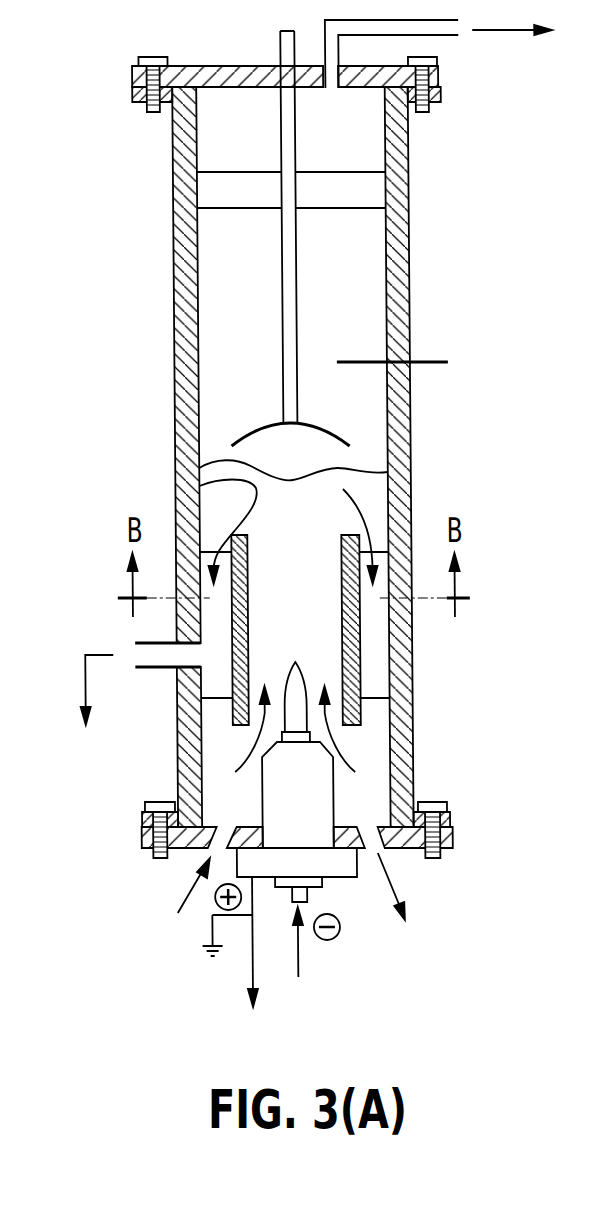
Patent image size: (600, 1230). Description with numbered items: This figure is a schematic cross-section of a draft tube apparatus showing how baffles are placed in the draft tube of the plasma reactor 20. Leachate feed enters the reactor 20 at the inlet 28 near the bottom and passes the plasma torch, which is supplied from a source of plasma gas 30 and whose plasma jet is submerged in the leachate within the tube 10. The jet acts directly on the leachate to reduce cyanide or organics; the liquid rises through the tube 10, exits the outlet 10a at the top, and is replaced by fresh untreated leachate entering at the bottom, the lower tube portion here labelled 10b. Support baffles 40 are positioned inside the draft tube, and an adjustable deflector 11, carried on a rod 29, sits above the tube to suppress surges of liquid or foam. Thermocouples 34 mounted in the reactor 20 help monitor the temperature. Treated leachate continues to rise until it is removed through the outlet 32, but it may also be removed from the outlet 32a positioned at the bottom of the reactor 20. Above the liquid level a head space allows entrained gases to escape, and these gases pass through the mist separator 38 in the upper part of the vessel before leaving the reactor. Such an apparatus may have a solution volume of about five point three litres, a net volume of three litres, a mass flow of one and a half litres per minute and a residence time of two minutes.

The tube 10 is at (346, 673).
The outlet 10a is at (171, 487).
The lower housing portion 10b is at (344, 738).
The adjustable deflector 11 is at (343, 432).
The reactor 20 is at (384, 472).
The inlet 28 is at (178, 893).
The support rod 29 is at (294, 338).
The source of plasma gas 30 is at (331, 865).
The valve 32 is at (80, 683).
The outlet 32a is at (386, 875).
The thermocouples 34 is at (427, 362).
The mist separator 38 is at (371, 197).
The support baffles 40 is at (372, 647).